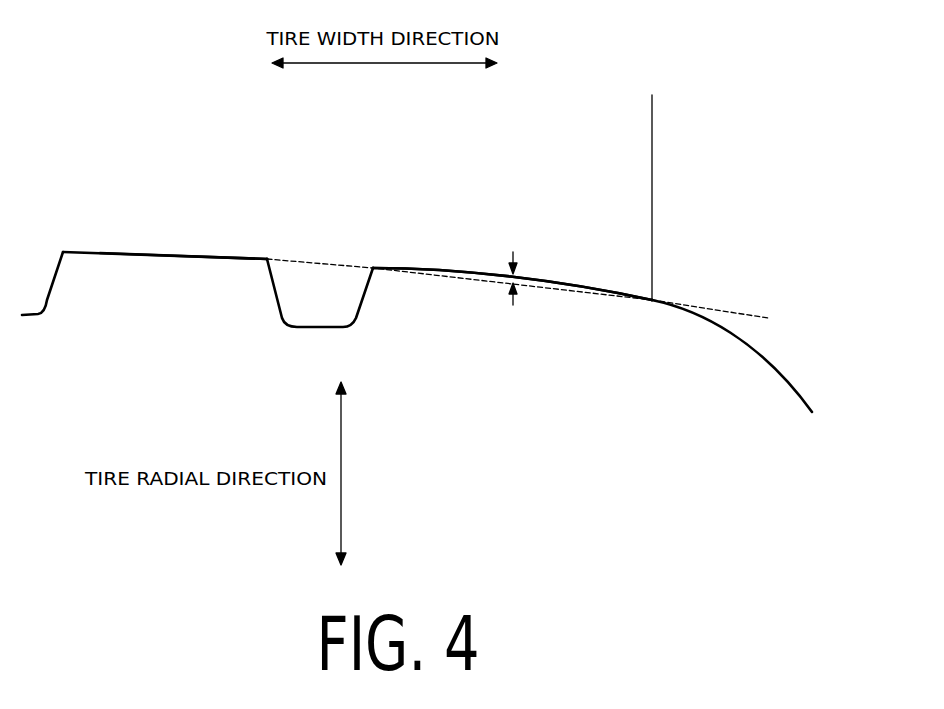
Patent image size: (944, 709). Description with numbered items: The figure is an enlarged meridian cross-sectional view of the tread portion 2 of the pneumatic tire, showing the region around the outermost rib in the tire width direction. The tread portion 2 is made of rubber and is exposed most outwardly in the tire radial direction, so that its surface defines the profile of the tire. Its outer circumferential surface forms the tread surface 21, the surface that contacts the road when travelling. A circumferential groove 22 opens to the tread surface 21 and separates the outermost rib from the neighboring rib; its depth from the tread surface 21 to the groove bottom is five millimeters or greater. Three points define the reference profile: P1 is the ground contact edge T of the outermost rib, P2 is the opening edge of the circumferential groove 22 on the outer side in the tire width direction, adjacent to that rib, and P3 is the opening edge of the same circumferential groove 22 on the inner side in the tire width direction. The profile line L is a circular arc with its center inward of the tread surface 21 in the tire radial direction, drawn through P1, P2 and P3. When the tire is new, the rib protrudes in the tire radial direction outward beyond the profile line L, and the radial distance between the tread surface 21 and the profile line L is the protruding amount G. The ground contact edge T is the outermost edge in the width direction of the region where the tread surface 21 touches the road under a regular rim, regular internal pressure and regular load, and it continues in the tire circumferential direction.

The tread portion 2 is at (63, 252).
The tread surface 21 is at (91, 252).
The circumferential groove 22 is at (275, 280).
The ground contact edge point P1 is at (651, 299).
The outer opening edge of the circumferential groove P2 is at (373, 268).
The inner opening edge of the circumferential groove P3 is at (267, 259).
The profile line L is at (322, 260).
The protruding amount G is at (527, 275).
The ground contact edge T is at (655, 300).